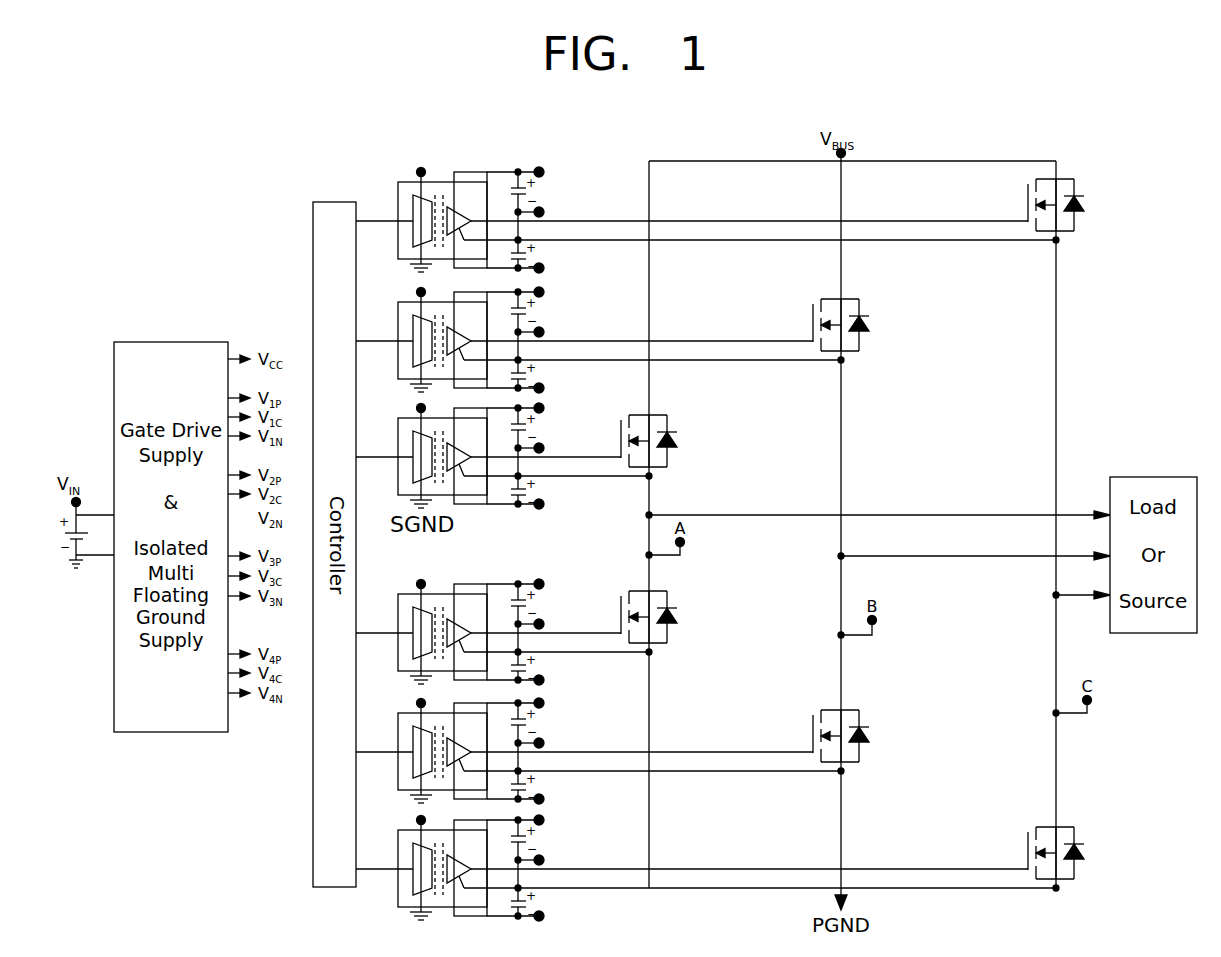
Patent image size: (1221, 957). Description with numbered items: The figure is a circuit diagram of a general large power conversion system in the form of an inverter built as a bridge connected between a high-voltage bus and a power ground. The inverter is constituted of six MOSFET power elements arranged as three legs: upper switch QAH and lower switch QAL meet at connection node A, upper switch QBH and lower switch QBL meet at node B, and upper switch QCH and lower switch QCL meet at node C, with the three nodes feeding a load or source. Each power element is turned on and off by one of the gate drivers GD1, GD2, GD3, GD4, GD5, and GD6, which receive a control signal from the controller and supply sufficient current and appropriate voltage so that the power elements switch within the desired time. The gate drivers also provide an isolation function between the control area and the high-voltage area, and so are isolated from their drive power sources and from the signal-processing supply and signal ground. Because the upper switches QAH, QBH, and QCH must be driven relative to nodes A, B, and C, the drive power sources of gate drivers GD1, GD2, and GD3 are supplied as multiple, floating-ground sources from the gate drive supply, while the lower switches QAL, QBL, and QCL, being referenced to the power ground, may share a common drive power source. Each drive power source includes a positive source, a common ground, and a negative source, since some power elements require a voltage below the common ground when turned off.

The gate driver GD1 is at (464, 221).
The gate driver GD2 is at (464, 341).
The gate driver GD3 is at (464, 457).
The gate driver GD4 is at (464, 633).
The gate driver GD5 is at (464, 752).
The gate driver GD6 is at (464, 869).
The upper switch QAH is at (669, 441).
The lower switch QAL is at (668, 617).
The upper switch QBH is at (861, 325).
The lower switch QBL is at (860, 736).
The upper switch QCH is at (1076, 205).
The lower switch QCL is at (1075, 853).